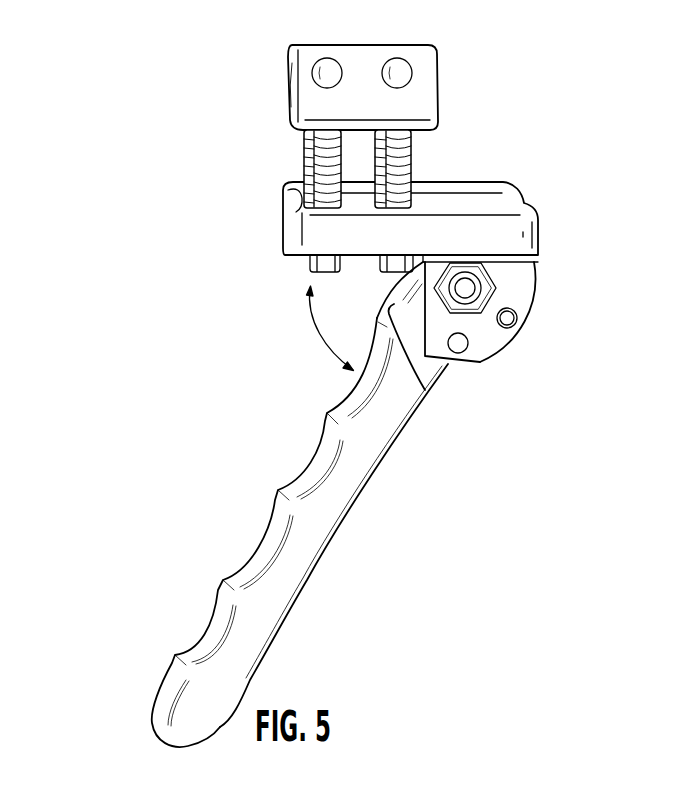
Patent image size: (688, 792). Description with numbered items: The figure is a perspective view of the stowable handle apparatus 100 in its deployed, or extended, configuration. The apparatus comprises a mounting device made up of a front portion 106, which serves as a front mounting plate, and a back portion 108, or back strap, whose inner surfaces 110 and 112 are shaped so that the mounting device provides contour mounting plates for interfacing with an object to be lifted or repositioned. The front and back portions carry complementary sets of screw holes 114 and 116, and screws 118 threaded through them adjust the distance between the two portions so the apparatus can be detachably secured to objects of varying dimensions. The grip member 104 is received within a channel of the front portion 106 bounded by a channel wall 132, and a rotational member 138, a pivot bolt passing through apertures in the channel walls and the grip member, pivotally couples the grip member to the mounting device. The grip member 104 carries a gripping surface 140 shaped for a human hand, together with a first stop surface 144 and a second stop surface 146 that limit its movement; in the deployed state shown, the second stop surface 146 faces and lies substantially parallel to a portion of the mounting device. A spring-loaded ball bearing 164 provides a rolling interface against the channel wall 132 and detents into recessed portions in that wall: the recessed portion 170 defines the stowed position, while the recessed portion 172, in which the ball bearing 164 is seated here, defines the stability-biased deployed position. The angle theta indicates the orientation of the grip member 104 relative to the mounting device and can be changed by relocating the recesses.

The handle apparatus 100 is at (133, 243).
The grip member 104 is at (353, 490).
The front portion 106 is at (426, 209).
The back portion 108 is at (345, 78).
The inner surface 110 is at (284, 205).
The inner surface 112 is at (287, 63).
The screw holes 114 is at (413, 200).
The screw holes 116 is at (397, 73).
The screws 118 is at (405, 162).
The channel wall 132 is at (495, 342).
The rotational member 138 is at (522, 337).
The gripping surface 140 is at (252, 498).
The first stop surface 144 is at (425, 390).
The second stop surface 146 is at (543, 258).
The ball bearing 164 is at (520, 307).
The recessed portion 170 is at (470, 350).
The recessed portion 172 is at (517, 333).